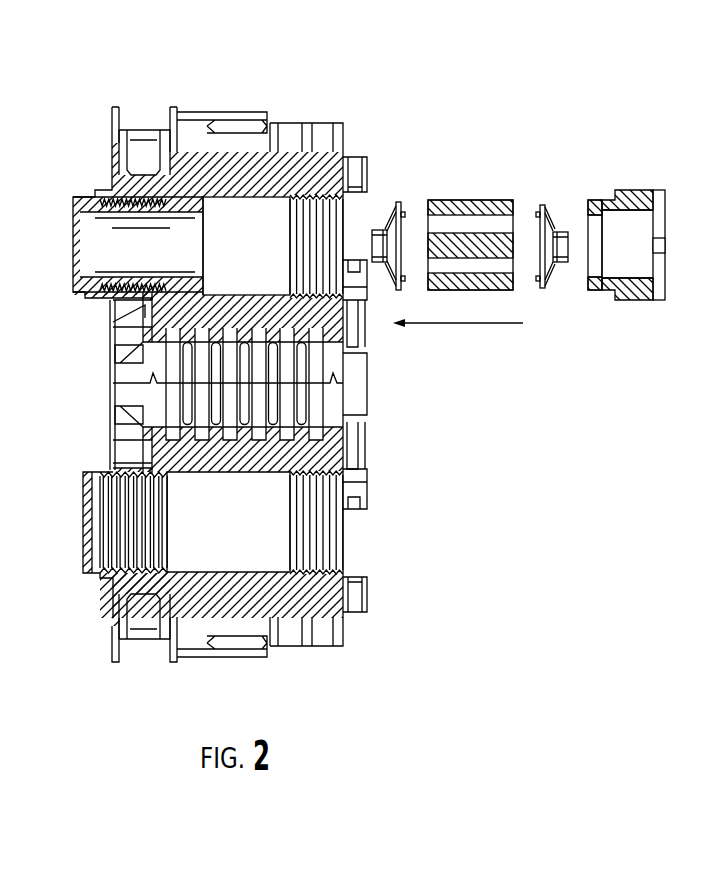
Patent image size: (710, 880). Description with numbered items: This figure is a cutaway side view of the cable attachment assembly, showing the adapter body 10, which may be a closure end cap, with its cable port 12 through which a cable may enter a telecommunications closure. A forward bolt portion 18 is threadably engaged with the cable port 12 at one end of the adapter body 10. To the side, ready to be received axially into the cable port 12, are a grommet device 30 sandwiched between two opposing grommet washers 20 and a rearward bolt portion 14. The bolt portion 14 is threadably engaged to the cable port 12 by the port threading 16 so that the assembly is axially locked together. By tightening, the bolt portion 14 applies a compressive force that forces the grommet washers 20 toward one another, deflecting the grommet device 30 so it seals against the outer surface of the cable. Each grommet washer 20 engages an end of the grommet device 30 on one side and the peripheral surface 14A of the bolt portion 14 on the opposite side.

The adapter body 10 is at (412, 463).
The cable port 12 is at (255, 218).
The rearward bolt portion 14 is at (615, 258).
The peripheral surface of the bolt portion 14A is at (584, 205).
The port threading 16 is at (320, 215).
The forward bolt portion 18 is at (85, 197).
The grommet washer 20 is at (398, 203).
The grommet device 30 is at (469, 201).